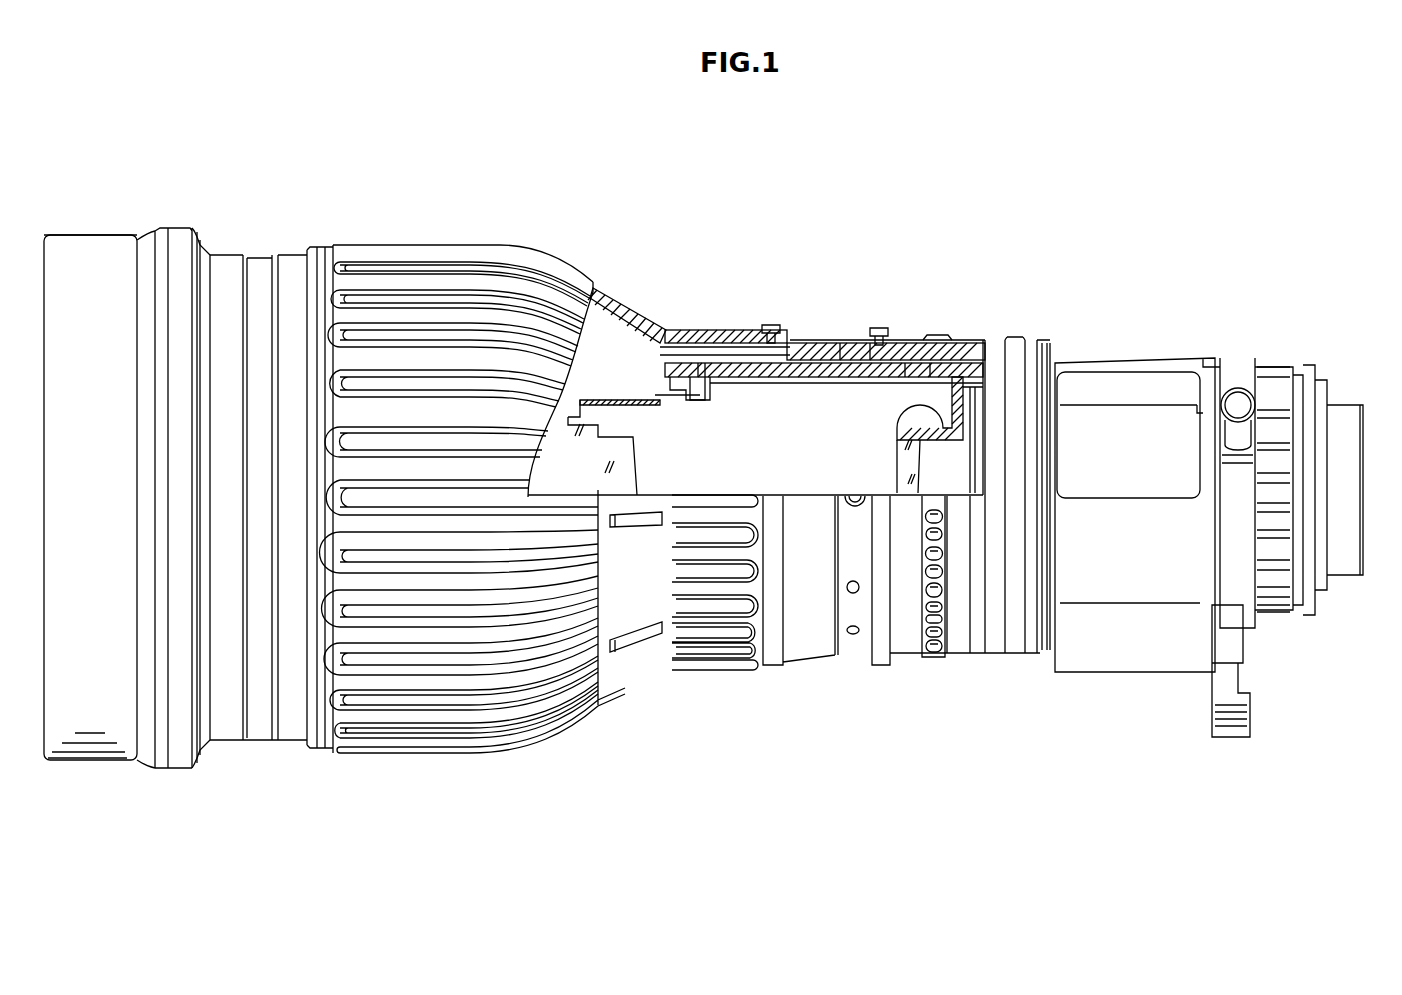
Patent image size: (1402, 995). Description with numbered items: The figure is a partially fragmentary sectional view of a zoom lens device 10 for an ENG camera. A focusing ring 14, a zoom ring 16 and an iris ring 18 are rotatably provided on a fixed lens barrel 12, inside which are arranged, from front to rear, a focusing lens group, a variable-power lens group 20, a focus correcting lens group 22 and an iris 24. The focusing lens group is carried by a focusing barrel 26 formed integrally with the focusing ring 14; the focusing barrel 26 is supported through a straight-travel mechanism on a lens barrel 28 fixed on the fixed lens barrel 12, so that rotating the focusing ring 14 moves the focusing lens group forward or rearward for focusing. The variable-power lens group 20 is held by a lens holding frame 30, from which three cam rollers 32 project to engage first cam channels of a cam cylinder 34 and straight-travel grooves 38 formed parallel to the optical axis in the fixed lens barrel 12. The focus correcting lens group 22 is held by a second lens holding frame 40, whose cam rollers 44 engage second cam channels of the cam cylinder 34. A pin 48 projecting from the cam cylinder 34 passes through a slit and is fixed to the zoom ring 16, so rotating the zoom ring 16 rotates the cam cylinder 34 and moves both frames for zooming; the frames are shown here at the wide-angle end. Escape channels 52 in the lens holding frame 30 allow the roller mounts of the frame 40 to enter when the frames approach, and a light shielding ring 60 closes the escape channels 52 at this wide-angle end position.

The zoom lens device 10 is at (659, 227).
The fixed lens barrel 12 is at (857, 343).
The focusing ring 14 is at (773, 325).
The zoom ring 16 is at (883, 328).
The iris ring 18 is at (940, 335).
The variable-power lens group 20 is at (630, 467).
The focus correcting lens group 22 is at (905, 473).
The iris 24 is at (955, 462).
The focusing barrel 26 is at (705, 330).
The lens barrel 28 is at (668, 325).
The lens holding frame 30 is at (620, 405).
The cam rollers 32 is at (697, 377).
The cam cylinder 34 is at (793, 383).
The straight-travel grooves 38 is at (762, 377).
The lens holding frame 40 is at (897, 423).
The cam rollers 44 is at (915, 367).
The pin 48 is at (858, 350).
The escape channels 52 is at (677, 397).
The light shielding ring 60 is at (662, 381).